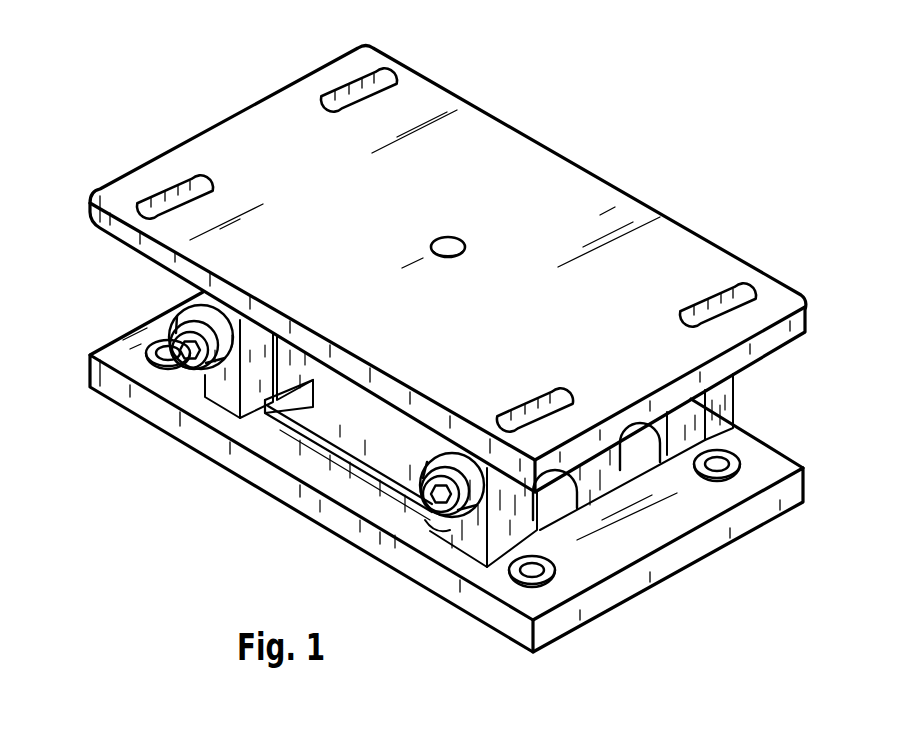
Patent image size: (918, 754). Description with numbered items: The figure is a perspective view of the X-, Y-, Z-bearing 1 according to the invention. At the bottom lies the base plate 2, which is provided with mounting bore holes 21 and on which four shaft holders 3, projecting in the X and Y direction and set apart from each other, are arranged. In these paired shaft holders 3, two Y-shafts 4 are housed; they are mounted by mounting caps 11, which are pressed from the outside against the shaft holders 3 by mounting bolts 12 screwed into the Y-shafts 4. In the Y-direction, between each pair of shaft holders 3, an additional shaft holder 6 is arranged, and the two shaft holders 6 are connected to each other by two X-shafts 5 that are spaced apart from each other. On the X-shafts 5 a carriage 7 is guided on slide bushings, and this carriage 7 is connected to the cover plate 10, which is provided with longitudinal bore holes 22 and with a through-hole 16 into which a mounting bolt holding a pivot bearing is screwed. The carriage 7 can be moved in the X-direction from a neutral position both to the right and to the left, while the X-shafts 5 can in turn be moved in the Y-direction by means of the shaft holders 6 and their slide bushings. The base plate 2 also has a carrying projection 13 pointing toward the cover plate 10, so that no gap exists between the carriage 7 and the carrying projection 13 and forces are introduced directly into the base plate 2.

The X-, Y-, Z-bearing 1 is at (620, 93).
The base plate 2 is at (708, 540).
The shaft holder 3 is at (208, 385).
The Y-shaft 4 is at (200, 385).
The X-shaft 5 is at (556, 493).
The additional shaft holder 6 is at (265, 428).
The carriage 7 is at (390, 433).
The cover plate 10 is at (615, 203).
The mounting cap 11 is at (435, 505).
The mounting bolt 12 is at (432, 510).
The carrying projection 13 is at (323, 440).
The through-hole 16 is at (450, 243).
The mounting bore hole 21 is at (163, 337).
The longitudinal bore hole 22 is at (353, 80).